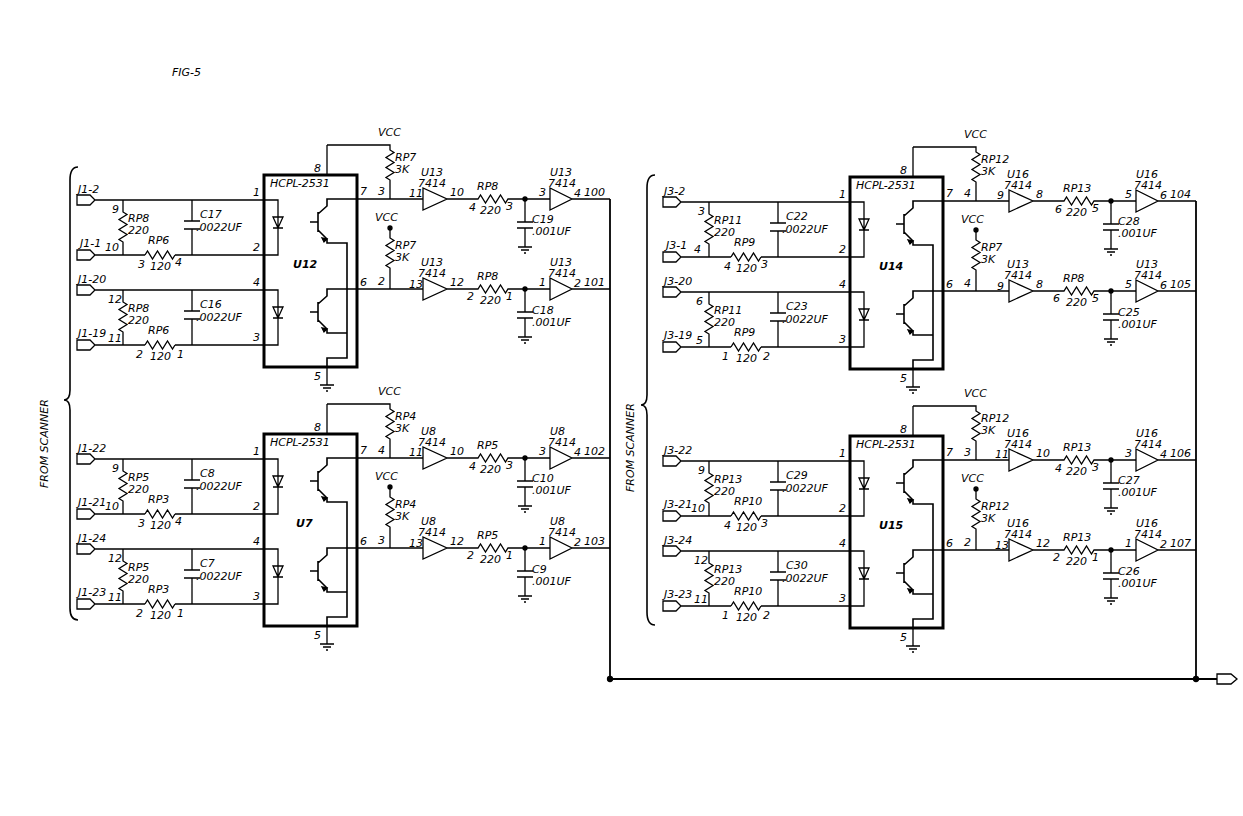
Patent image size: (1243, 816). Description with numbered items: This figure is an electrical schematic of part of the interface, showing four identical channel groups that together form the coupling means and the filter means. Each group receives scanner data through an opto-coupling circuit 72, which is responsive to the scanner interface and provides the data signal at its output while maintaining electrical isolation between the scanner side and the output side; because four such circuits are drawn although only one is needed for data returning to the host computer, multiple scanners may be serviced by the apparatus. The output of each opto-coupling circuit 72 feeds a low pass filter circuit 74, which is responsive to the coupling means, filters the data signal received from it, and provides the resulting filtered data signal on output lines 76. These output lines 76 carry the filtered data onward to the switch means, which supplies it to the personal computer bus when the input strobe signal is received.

The opto-coupling circuit 72 is at (364, 332).
The low pass filter circuit 74 is at (531, 180).
The output lines 76 is at (1230, 675).